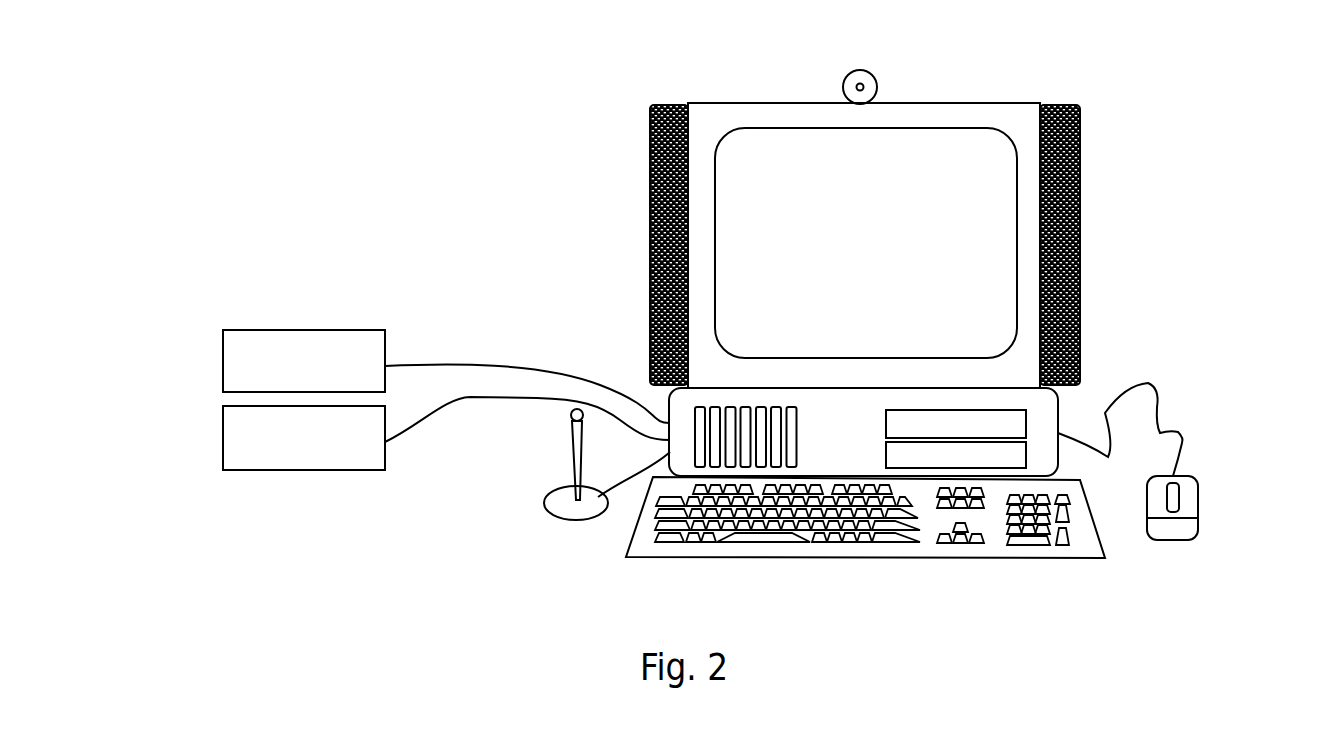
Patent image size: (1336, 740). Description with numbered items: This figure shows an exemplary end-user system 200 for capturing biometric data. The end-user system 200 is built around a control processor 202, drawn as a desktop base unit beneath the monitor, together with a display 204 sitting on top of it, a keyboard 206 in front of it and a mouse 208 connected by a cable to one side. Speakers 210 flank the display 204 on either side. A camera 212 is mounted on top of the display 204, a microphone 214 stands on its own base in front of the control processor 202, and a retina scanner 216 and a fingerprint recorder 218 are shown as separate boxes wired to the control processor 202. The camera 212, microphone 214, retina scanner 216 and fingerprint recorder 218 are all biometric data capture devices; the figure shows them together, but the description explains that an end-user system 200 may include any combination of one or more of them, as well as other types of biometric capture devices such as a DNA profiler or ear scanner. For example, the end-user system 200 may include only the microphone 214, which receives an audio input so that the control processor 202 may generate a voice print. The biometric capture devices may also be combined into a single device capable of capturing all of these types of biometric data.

The end-user system 200 is at (496, 110).
The control processor 202 is at (1057, 410).
The display 204 is at (888, 253).
The keyboard 206 is at (970, 560).
The mouse 208 is at (1193, 476).
The speakers 210 is at (667, 104).
The camera 212 is at (860, 70).
The microphone 214 is at (575, 455).
The retina scanner 216 is at (272, 330).
The fingerprint recorder 218 is at (275, 470).